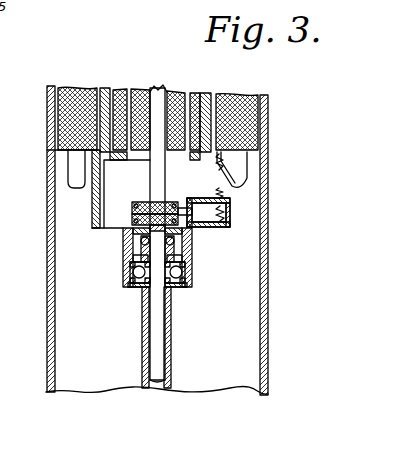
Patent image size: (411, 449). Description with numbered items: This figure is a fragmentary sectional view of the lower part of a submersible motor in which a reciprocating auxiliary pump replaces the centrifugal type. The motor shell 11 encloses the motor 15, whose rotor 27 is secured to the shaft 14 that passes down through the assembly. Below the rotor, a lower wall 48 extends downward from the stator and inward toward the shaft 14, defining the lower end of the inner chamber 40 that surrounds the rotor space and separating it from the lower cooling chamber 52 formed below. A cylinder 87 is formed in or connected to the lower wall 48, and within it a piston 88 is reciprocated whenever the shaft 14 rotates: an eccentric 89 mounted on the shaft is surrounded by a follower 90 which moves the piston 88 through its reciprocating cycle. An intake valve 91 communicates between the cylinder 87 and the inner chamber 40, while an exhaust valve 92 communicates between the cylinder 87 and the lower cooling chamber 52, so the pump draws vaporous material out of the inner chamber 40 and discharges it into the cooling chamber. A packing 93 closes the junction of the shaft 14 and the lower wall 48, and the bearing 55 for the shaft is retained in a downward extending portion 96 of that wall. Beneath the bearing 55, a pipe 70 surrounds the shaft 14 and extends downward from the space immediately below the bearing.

The motor shell 11 is at (46, 321).
The shaft 14 is at (162, 326).
The motor 15 is at (227, 122).
The rotor 27 is at (182, 95).
The inner chamber 40 is at (194, 171).
The lower wall 48 is at (92, 228).
The lower cooling chamber 52 is at (240, 311).
The bearing 55 is at (138, 288).
The pipe 70 is at (173, 361).
The cylinder 87 is at (203, 230).
The piston 88 is at (197, 213).
The eccentric 89 is at (137, 200).
The follower 90 is at (131, 213).
The intake valve 91 is at (204, 210).
The exhaust valve 92 is at (222, 229).
The packing 93 is at (125, 248).
The downward extending portion 96 is at (126, 267).